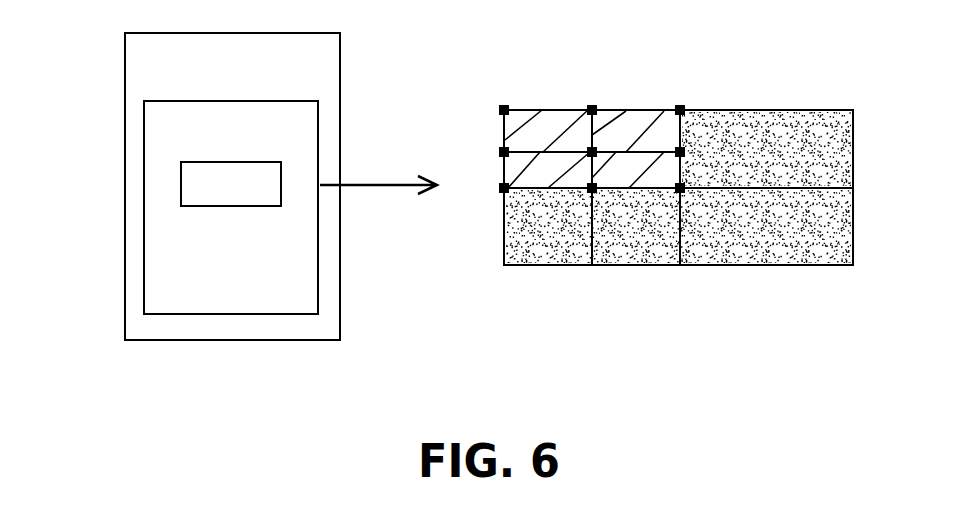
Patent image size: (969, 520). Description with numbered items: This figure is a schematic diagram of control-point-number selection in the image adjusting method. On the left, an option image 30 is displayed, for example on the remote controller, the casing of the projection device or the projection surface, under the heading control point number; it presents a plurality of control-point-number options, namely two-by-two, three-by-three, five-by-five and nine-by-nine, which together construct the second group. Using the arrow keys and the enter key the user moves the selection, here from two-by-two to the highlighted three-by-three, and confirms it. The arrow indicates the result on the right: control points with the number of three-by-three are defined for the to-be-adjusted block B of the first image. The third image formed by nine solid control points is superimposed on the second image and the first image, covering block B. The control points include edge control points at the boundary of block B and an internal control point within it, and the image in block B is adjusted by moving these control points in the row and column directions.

The option image 30 is at (126, 62).
The block B is at (521, 172).